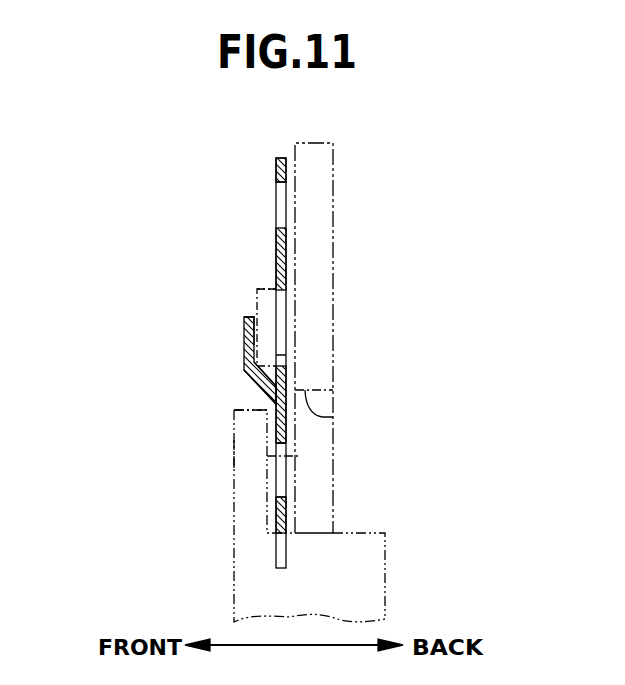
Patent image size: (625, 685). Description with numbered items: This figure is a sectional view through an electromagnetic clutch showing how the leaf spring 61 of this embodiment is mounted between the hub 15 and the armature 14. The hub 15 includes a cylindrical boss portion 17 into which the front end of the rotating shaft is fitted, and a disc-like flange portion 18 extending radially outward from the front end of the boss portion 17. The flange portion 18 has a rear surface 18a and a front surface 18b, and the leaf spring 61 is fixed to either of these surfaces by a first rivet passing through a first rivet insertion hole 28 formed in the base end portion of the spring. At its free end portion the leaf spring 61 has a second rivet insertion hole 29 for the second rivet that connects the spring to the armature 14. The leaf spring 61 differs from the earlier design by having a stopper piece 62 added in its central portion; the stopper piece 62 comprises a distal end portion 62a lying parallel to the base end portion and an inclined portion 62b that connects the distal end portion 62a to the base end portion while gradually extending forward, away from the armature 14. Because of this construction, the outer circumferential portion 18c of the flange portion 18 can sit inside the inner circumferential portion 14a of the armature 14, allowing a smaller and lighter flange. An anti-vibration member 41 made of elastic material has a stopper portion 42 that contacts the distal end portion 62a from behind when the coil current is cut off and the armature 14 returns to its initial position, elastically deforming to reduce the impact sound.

The armature 14 is at (334, 172).
The inner circumferential portion of the armature 14a is at (333, 417).
The hub 15 is at (234, 563).
The boss portion 17 is at (386, 573).
The flange portion 18 is at (250, 444).
The rear surface of the flange portion 18a is at (300, 456).
The front surface of the flange portion 18b is at (234, 456).
The outer circumferential portion of the flange portion 18c is at (246, 410).
The first rivet insertion hole 28 is at (283, 495).
The second rivet insertion hole 29 is at (276, 216).
The anti-vibration member 41 is at (255, 291).
The stopper portion 42 is at (257, 307).
The leaf spring 61 is at (276, 168).
The stopper piece 62 is at (244, 348).
The distal end portion 62a is at (244, 340).
The inclined portion 62b is at (254, 389).